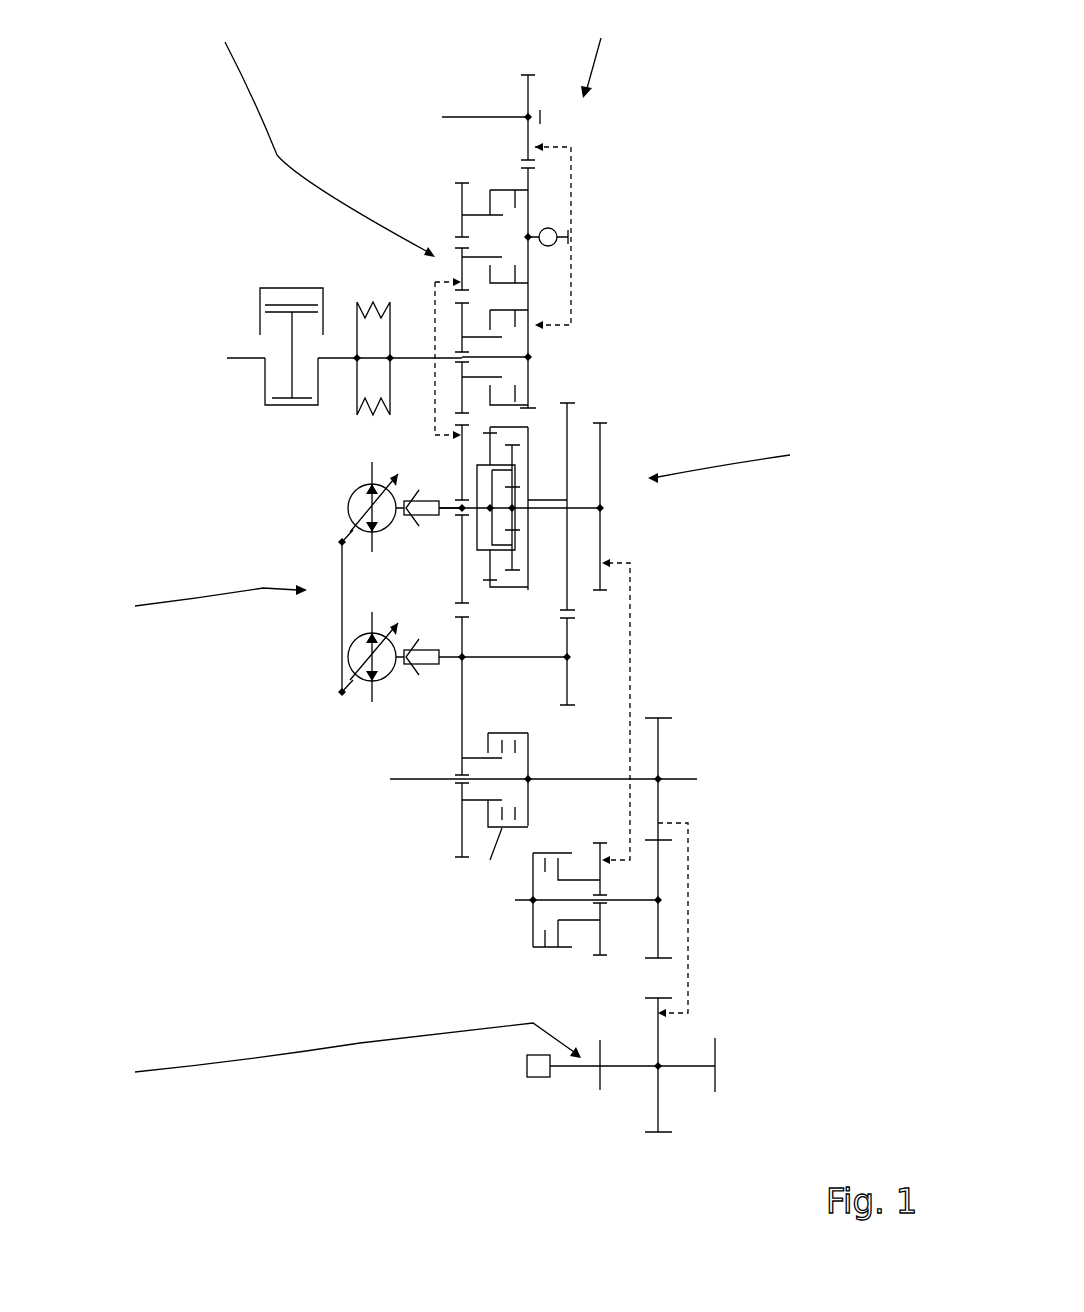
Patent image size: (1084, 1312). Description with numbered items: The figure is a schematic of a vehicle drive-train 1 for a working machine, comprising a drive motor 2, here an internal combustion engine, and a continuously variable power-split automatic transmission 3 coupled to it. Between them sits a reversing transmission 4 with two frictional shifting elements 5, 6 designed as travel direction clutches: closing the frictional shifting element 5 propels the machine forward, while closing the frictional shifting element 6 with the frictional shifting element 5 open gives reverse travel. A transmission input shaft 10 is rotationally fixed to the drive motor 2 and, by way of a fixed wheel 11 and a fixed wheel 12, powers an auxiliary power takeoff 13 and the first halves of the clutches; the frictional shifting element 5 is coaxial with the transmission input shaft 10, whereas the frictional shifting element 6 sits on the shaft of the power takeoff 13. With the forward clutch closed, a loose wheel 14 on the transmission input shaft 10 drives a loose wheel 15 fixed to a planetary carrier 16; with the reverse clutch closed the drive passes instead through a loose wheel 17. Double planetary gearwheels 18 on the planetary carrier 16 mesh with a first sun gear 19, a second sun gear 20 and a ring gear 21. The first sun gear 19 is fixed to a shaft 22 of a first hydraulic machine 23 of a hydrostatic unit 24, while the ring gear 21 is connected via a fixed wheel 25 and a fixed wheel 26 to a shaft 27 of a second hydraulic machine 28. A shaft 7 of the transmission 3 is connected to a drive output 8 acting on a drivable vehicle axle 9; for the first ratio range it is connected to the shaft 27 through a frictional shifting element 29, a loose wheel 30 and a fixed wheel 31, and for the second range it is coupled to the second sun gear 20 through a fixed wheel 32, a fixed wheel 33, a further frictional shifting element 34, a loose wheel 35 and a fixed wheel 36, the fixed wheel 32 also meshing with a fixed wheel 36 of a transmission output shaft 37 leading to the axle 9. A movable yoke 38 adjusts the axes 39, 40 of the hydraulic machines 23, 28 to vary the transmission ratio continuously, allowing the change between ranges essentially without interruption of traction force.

The vehicle drive-train 1 is at (594, 49).
The drive motor 2 is at (262, 288).
The continuously variable power-split automatic transmission 3 is at (728, 458).
The reversing transmission 4 is at (326, 130).
The frictional shifting element 5 is at (530, 285).
The frictional shifting element 6 is at (497, 190).
The shaft 7 is at (683, 780).
The drive output 8 is at (414, 1057).
The drivable vehicle axle 9 is at (538, 1078).
The transmission input shaft 10 is at (410, 355).
The fixed wheel 11 is at (528, 347).
The fixed wheel 12 is at (530, 202).
The auxiliary power takeoff 13 is at (447, 240).
The loose wheel 14 is at (435, 282).
The loose wheel 15 is at (462, 583).
The planetary carrier 16 is at (513, 553).
The loose wheel 17 is at (447, 200).
The double planetary gearwheels 18 is at (513, 537).
The first sun gear 19 is at (460, 497).
The second sun gear 20 is at (515, 497).
The ring gear 21 is at (530, 423).
The shaft 22 is at (455, 515).
The first hydraulic machine 23 is at (350, 495).
The hydrostatic unit 24 is at (203, 605).
The fixed wheel 25 is at (570, 420).
The fixed wheel 26 is at (535, 633).
The shaft 27 is at (535, 668).
The second hydraulic machine 28 is at (378, 685).
The frictional shifting element 29 is at (502, 828).
The loose wheel 30 is at (457, 823).
The fixed wheel 31 is at (460, 680).
The fixed wheel 32 is at (660, 748).
The fixed wheel 33 is at (660, 860).
The frictional shifting element 34 is at (533, 950).
The loose wheel 35 is at (600, 945).
The fixed wheel 36 is at (662, 1103).
The transmission output shaft 37 is at (678, 1064).
The movable yoke 38 is at (350, 665).
The axis 39 is at (342, 540).
The axis 40 is at (352, 688).